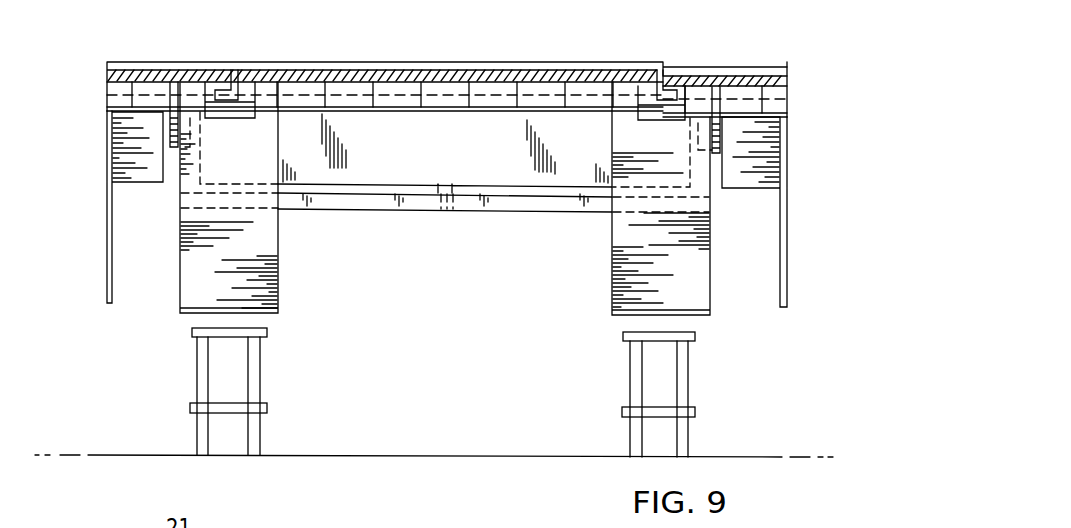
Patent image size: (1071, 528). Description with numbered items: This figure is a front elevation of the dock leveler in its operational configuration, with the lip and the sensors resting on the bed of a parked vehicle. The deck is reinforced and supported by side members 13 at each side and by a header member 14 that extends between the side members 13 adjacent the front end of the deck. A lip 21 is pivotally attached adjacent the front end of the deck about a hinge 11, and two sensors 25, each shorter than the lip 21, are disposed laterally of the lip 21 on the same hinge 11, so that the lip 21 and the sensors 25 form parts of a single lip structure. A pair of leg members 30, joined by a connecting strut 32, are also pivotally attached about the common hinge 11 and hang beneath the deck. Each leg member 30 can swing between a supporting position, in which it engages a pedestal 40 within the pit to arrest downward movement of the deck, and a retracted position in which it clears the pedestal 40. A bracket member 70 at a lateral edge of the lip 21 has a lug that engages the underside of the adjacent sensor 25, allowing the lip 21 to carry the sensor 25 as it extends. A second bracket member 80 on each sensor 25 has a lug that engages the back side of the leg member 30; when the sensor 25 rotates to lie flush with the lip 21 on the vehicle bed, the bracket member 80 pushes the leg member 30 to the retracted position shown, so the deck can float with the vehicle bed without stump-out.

The hinge 11 is at (788, 98).
The side members 13 is at (104, 267).
The header member 14 is at (458, 159).
The lip 21 is at (430, 76).
The sensor 25 is at (163, 80).
The leg member 30 is at (240, 274).
The connecting strut 32 is at (475, 206).
The pedestal 40 is at (262, 387).
The bracket member 70 is at (236, 92).
The bracket member 80 is at (169, 120).